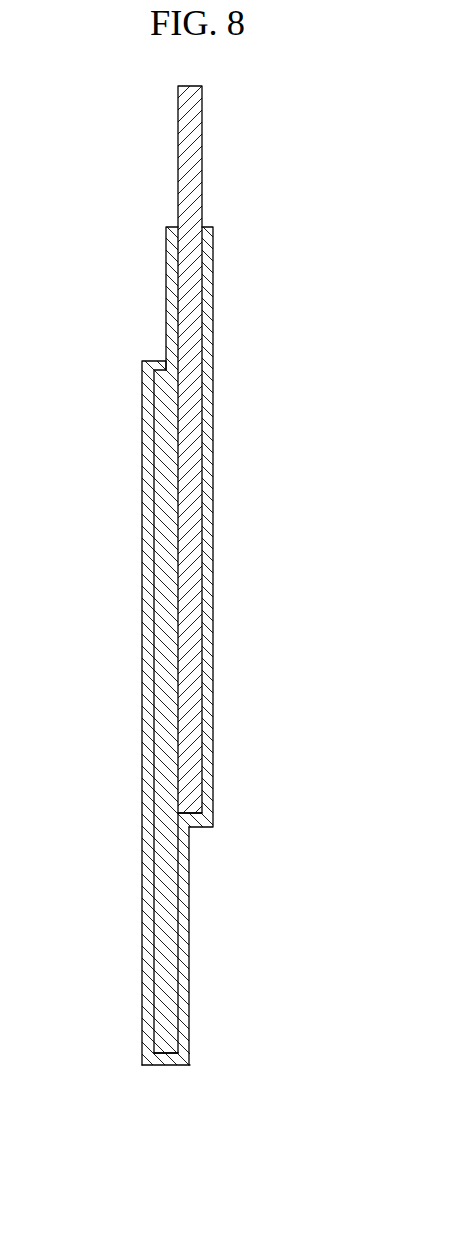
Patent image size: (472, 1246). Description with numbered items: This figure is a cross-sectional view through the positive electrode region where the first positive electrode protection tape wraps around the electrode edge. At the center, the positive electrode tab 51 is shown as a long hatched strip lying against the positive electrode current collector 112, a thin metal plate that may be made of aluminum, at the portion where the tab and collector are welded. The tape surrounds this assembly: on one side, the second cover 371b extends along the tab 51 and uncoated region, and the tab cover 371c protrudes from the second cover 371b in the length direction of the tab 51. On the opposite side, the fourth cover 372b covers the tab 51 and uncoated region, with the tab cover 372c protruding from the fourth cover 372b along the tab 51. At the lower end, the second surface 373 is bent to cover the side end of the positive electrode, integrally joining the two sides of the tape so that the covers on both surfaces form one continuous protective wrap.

The positive electrode tab 51 is at (192, 138).
The tab cover 371c is at (207, 288).
The tab cover 372c is at (172, 281).
The positive electrode current collector 112 is at (162, 577).
The second cover 371b is at (187, 919).
The fourth cover 372b is at (150, 950).
The second surface 373 is at (168, 1056).